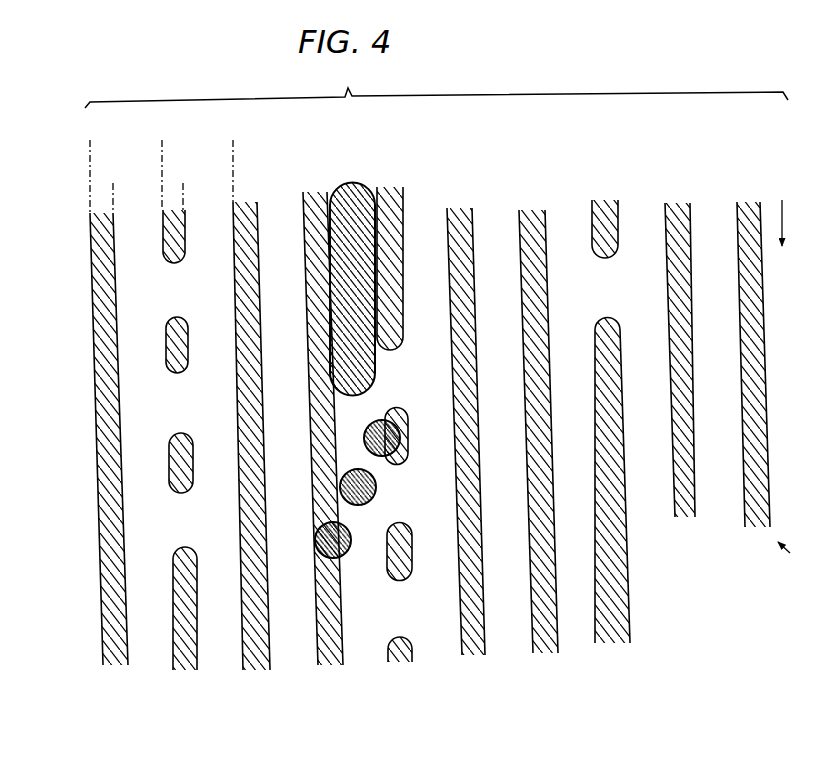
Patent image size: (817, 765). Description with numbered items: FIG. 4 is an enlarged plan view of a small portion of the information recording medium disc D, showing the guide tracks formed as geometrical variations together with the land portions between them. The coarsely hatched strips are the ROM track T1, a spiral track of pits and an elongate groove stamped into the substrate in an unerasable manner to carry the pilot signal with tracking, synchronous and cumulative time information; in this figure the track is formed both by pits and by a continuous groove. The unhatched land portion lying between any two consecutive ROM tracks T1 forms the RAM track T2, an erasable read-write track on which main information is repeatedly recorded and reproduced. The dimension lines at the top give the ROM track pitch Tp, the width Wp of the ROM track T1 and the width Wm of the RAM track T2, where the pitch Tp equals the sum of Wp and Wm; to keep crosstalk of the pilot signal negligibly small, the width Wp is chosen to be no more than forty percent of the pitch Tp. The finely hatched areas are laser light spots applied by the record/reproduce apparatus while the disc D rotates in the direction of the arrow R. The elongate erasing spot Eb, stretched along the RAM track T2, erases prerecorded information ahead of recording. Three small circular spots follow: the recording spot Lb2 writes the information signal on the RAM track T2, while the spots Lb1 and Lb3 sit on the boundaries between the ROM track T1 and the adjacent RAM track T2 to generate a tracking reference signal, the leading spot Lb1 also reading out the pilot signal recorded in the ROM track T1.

The ROM track pitch Tp is at (90, 149).
The width of the ROM track Wp is at (112, 190).
The width of the RAM track Wm is at (162, 190).
The ROM track T1 is at (117, 670).
The RAM track T2 is at (276, 221).
The erasing laser light spot Eb is at (372, 378).
The laser light spot Lb1 is at (375, 418).
The recording laser light spot Lb2 is at (374, 485).
The laser light spot Lb3 is at (345, 550).
The direction of rotation arrow R is at (776, 211).
The information recording medium disc D is at (789, 557).